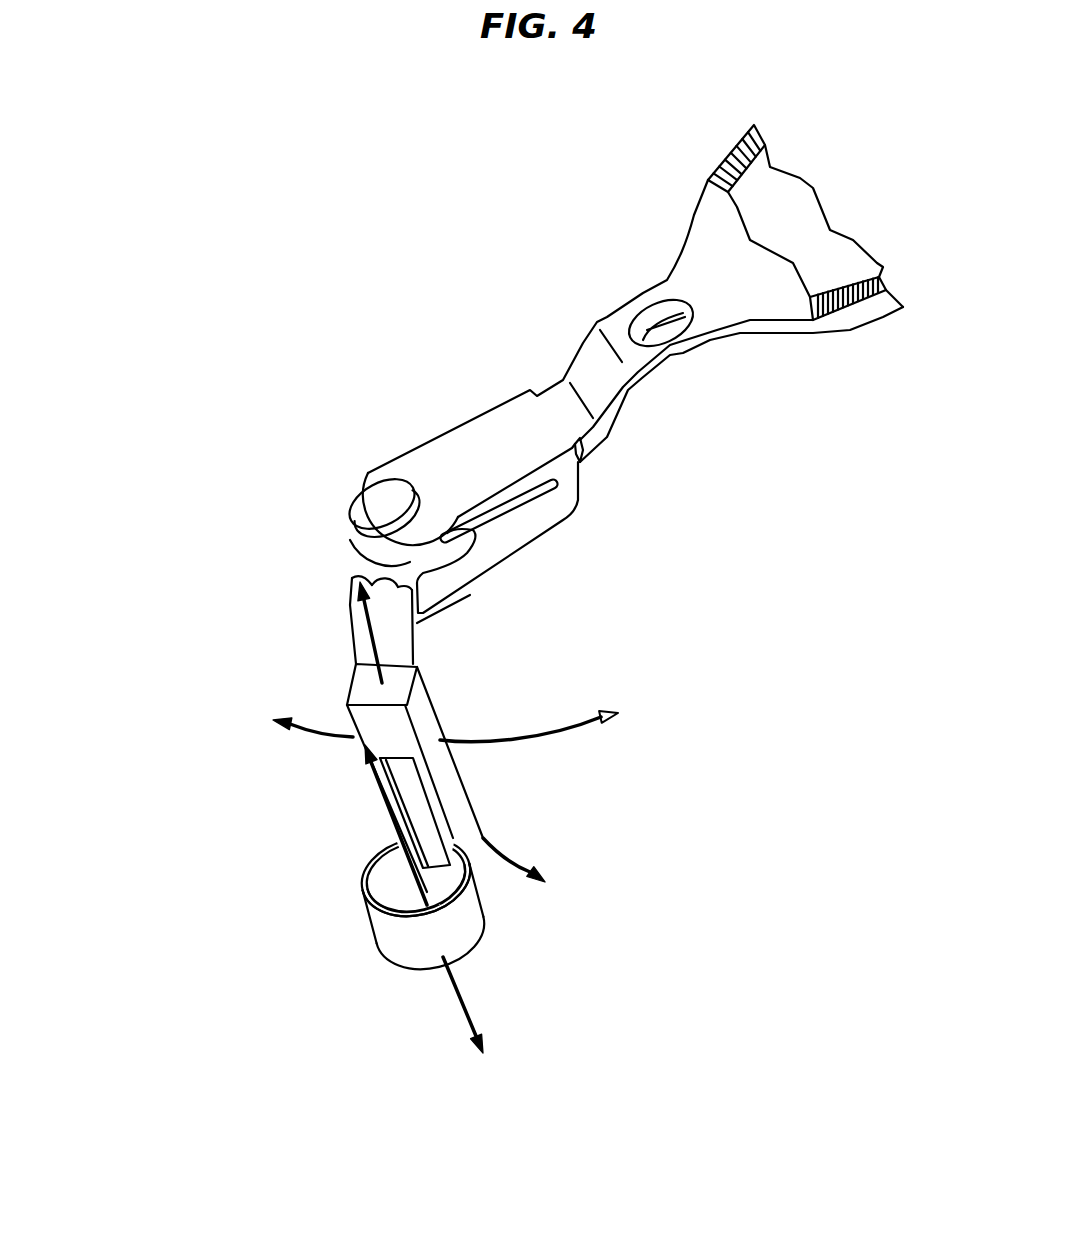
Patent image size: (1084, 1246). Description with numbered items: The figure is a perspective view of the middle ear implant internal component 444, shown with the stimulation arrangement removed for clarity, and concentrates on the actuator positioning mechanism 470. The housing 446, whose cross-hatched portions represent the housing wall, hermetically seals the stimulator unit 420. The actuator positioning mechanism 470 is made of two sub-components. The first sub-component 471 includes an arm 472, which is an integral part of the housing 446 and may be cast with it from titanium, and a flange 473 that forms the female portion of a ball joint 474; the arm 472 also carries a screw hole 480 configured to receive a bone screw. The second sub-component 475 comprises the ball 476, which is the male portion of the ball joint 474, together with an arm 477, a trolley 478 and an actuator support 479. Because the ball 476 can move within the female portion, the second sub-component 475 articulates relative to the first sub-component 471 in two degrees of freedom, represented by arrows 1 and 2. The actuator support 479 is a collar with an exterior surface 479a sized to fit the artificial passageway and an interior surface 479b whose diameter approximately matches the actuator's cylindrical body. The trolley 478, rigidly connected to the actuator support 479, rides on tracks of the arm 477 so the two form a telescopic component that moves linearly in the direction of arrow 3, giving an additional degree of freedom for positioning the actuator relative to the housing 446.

The stimulator unit 420 is at (785, 228).
The middle ear implant internal component 444 is at (703, 142).
The housing 446 is at (814, 242).
The actuator positioning mechanism 470 is at (437, 287).
The sub-component 471 is at (296, 432).
The arm 472 is at (622, 373).
The flange 473 is at (507, 530).
The ball joint 474 is at (513, 570).
The sub-component 475 is at (236, 589).
The ball 476 is at (325, 524).
The arm 477 is at (357, 625).
The trolley 478 is at (370, 720).
The actuator support 479 is at (384, 935).
The exterior surface 479a is at (382, 888).
The interior surface 479b is at (473, 903).
The screw hole 480 is at (685, 303).
The arrow 1 is at (503, 740).
The arrow 2 is at (360, 603).
The arrow 3 is at (467, 1000).